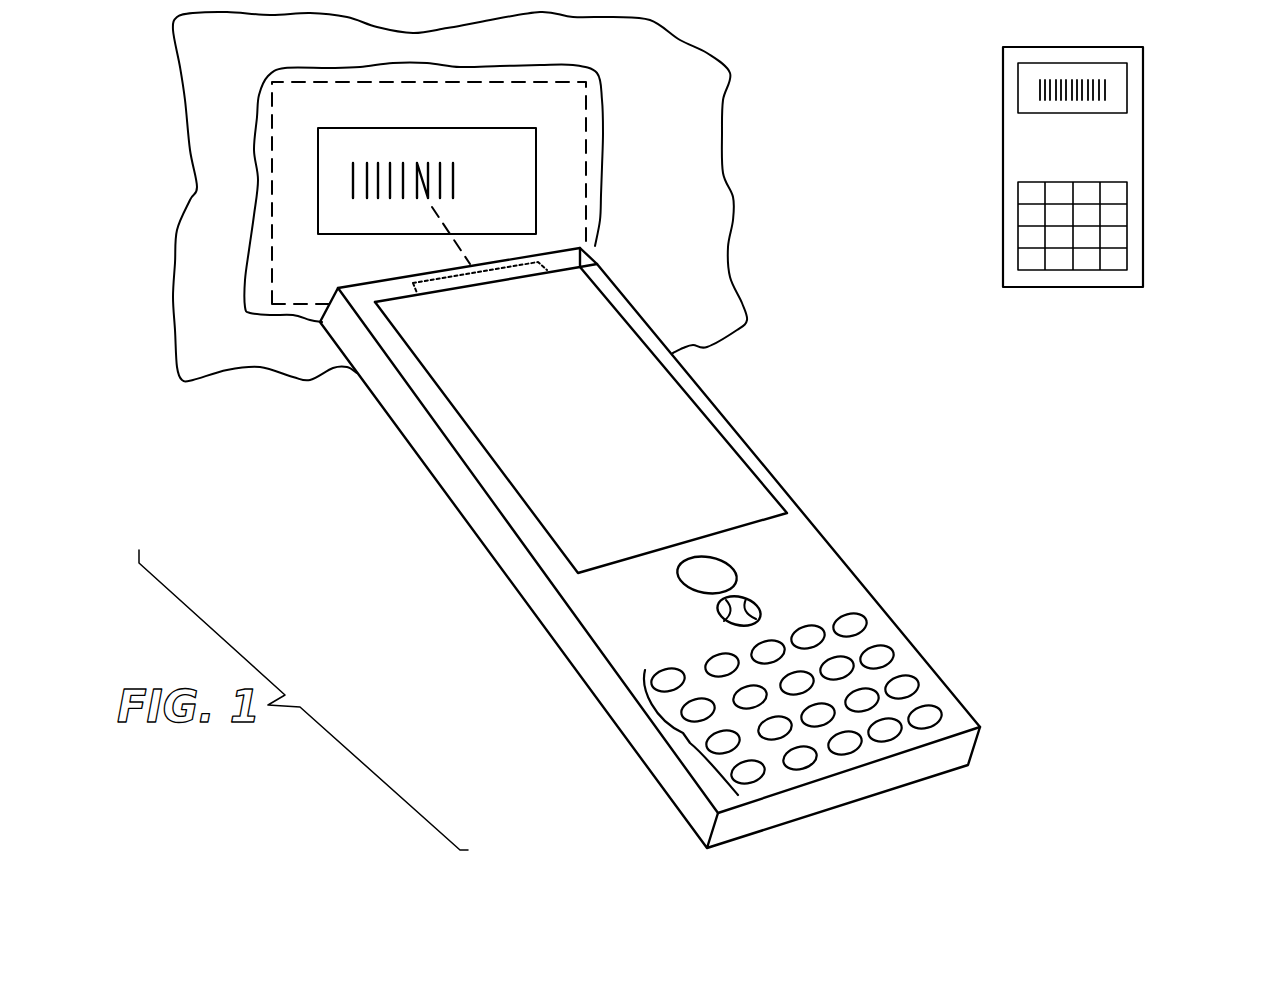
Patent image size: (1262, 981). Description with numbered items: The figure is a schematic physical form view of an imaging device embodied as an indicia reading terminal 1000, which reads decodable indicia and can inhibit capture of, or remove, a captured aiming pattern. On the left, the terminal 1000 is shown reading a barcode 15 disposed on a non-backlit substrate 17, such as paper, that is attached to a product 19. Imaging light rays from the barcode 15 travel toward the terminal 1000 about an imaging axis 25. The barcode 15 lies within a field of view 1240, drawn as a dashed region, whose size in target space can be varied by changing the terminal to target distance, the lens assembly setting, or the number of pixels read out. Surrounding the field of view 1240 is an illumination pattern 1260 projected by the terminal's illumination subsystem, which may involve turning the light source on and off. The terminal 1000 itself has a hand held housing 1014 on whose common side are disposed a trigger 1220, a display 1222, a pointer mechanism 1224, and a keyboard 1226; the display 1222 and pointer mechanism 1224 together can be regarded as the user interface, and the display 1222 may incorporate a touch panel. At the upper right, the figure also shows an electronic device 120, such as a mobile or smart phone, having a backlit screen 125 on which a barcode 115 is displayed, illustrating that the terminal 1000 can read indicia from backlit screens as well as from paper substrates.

The barcode 15 is at (455, 168).
The non-backlit substrate 17 is at (322, 162).
The product 19 is at (735, 206).
The imaging axis 25 is at (447, 233).
The barcode 115 is at (1105, 80).
The electronic device 120 is at (965, 89).
The backlit screen 125 is at (1118, 108).
The indicia reading terminal 1000 is at (767, 311).
The hand held housing 1014 is at (885, 636).
The trigger 1220 is at (733, 567).
The display 1222 is at (780, 508).
The pointer mechanism 1224 is at (761, 604).
The keyboard 1226 is at (688, 740).
The field of view 1240 is at (585, 167).
The illumination pattern 1260 is at (602, 125).